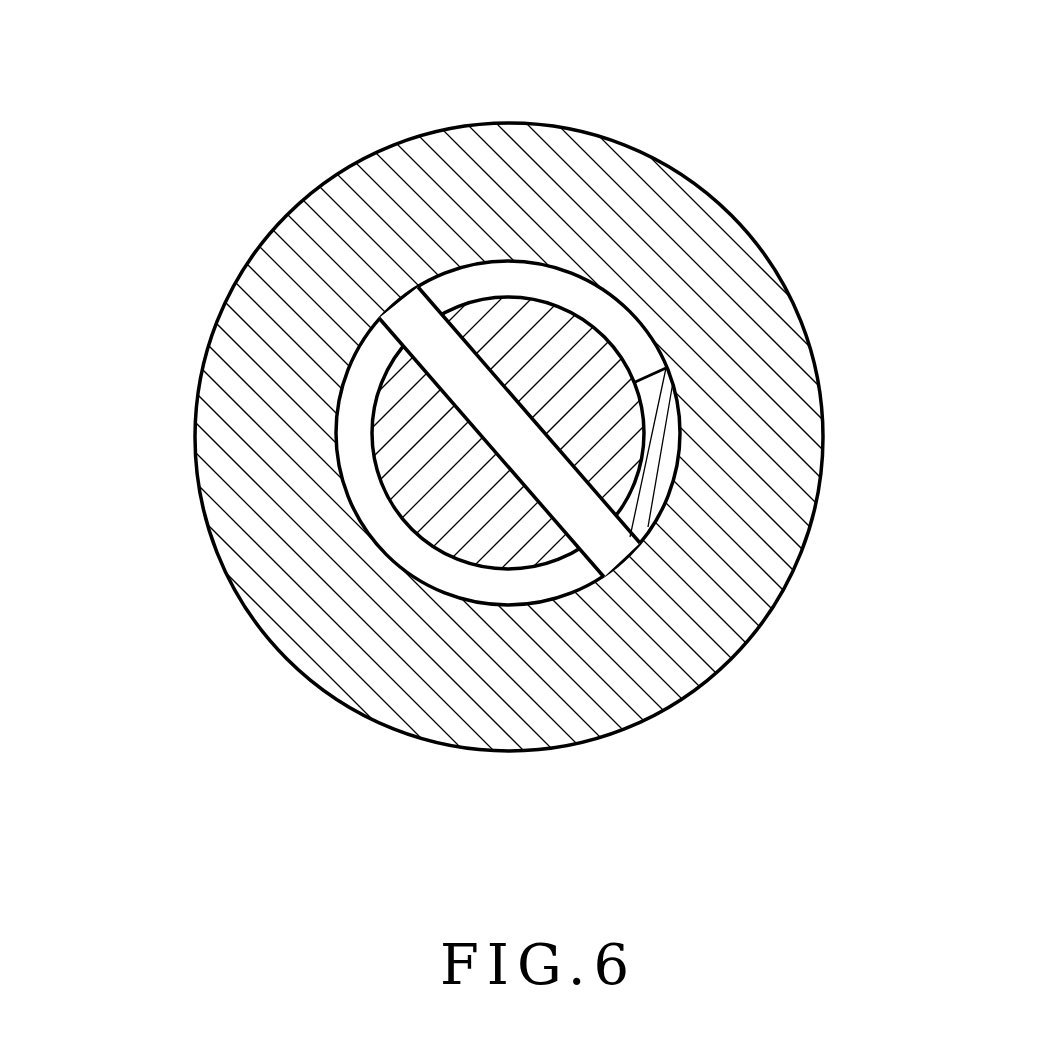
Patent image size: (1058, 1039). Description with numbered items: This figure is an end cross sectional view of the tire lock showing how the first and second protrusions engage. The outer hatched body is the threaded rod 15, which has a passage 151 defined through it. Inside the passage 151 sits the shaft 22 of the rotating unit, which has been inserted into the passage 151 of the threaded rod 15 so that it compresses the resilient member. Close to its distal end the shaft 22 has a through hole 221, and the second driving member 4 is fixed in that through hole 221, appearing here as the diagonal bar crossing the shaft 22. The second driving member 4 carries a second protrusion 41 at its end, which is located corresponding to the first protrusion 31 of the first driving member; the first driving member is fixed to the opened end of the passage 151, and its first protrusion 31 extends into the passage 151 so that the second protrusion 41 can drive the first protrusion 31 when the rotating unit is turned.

The threaded rod 15 is at (673, 283).
The passage 151 is at (535, 278).
The shaft 22 is at (488, 337).
The through hole 221 is at (445, 402).
The second driving member 4 is at (508, 433).
The second protrusion 41 is at (598, 553).
The first protrusion 31 is at (640, 513).